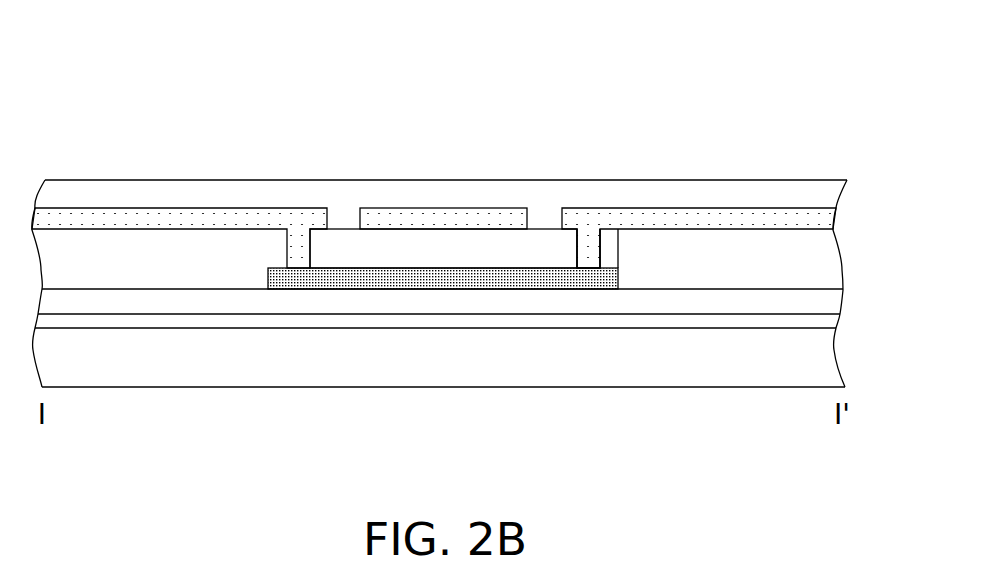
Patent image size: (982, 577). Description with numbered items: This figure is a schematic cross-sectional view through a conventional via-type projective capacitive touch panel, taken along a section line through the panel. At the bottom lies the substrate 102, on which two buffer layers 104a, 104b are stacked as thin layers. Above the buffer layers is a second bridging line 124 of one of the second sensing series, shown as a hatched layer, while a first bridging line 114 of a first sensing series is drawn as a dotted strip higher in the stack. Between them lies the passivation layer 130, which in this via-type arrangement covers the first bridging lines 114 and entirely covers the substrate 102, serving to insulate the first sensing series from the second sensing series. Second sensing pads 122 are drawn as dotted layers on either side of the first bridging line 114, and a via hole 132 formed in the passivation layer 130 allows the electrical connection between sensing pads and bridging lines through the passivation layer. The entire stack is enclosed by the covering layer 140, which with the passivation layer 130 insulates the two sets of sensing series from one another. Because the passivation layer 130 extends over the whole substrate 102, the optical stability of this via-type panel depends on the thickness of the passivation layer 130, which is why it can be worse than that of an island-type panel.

The substrate 102 is at (801, 372).
The buffer layer 104a is at (523, 322).
The buffer layer 104b is at (602, 308).
The first bridging line 114 is at (447, 217).
The second sensing pad 122 is at (158, 222).
The second bridging line 124 is at (610, 268).
The passivation layer 130 is at (340, 245).
The via hole 132 is at (597, 248).
The covering layer 140 is at (790, 192).